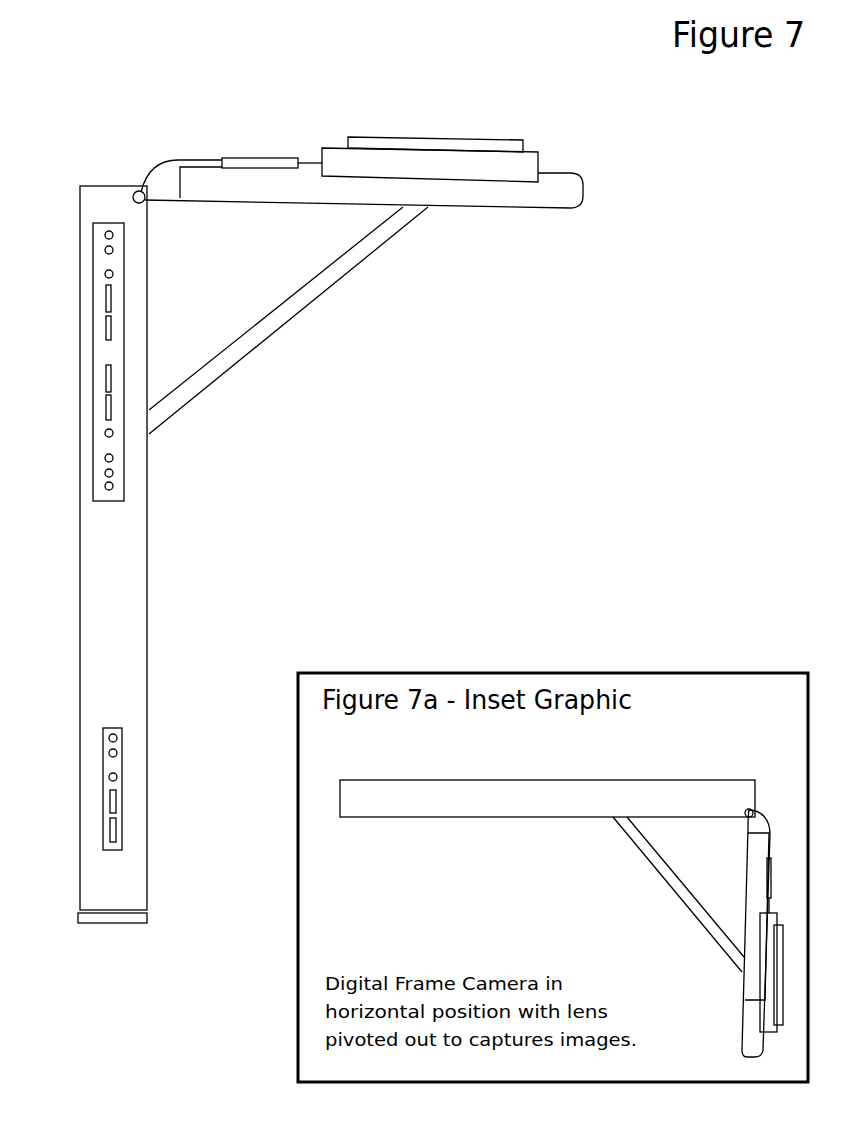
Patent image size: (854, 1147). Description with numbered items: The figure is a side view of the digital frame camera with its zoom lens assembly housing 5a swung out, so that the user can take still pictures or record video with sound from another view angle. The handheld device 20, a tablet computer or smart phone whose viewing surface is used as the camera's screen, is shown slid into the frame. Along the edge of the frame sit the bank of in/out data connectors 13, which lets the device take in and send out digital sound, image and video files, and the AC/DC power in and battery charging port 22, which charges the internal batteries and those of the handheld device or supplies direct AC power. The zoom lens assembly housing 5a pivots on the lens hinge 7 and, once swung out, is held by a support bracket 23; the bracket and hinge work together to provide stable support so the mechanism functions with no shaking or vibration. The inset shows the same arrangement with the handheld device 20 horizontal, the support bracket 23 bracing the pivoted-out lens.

In FIG. 7, the zoom lens assembly housing 5a is at (435, 122).
In FIG. 7, the lens hinge 7 is at (155, 213).
In FIG. 7, the bank of in/out data connectors 13 is at (134, 468).
In FIG. 7, the handheld device 20 is at (75, 500).
In FIG. 7A, the handheld device 20 is at (438, 777).
In FIG. 7, the AC/DC power in and battery charging port 22 is at (137, 773).
In FIG. 7A, the support bracket 23 is at (678, 928).